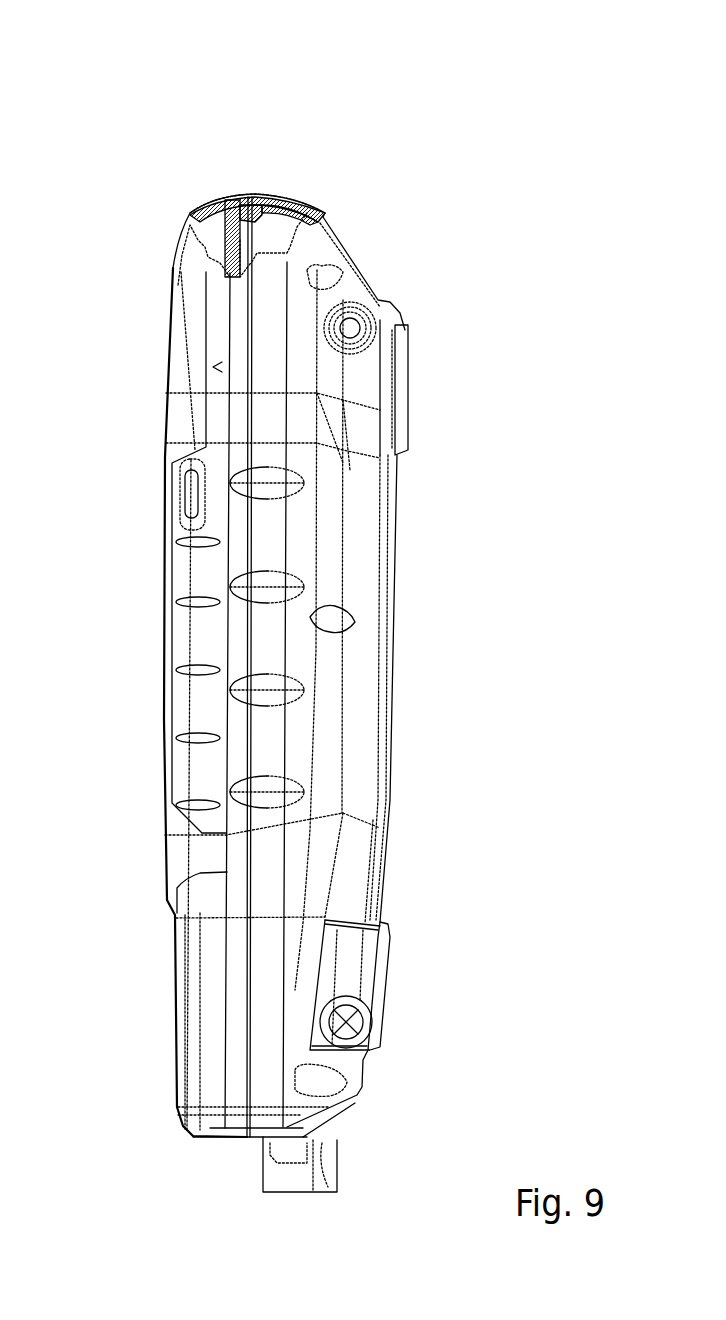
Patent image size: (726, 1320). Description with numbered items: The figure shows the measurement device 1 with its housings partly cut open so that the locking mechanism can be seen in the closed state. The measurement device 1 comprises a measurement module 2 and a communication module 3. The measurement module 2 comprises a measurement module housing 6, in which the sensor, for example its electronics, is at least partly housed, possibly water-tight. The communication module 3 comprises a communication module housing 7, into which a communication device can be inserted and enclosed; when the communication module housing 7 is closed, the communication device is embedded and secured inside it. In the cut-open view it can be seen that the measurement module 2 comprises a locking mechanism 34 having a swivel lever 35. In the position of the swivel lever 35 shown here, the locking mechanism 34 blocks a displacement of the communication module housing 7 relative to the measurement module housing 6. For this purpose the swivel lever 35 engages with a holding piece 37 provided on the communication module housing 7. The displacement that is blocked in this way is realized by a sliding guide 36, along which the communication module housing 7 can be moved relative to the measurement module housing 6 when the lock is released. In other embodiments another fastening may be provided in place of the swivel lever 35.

The measurement device 1 is at (229, 602).
The measurement module 2 is at (347, 677).
The communication module 3 is at (272, 694).
The measurement module housing 6 is at (288, 201).
The communication module housing 7 is at (203, 203).
The locking mechanism 34 is at (238, 146).
The swivel lever 35 is at (250, 195).
The sliding guide 36 is at (230, 241).
The holding piece 37 is at (230, 200).